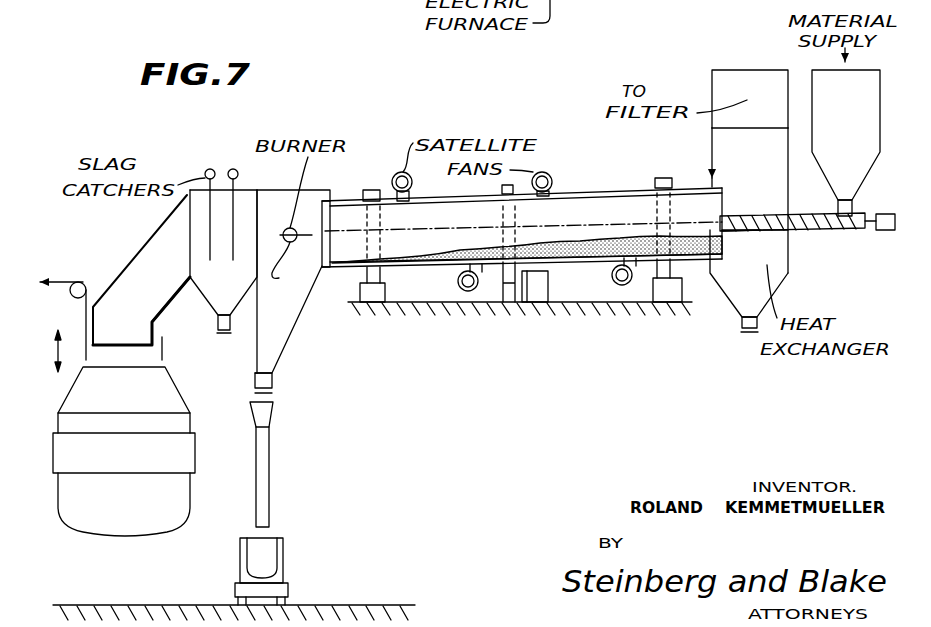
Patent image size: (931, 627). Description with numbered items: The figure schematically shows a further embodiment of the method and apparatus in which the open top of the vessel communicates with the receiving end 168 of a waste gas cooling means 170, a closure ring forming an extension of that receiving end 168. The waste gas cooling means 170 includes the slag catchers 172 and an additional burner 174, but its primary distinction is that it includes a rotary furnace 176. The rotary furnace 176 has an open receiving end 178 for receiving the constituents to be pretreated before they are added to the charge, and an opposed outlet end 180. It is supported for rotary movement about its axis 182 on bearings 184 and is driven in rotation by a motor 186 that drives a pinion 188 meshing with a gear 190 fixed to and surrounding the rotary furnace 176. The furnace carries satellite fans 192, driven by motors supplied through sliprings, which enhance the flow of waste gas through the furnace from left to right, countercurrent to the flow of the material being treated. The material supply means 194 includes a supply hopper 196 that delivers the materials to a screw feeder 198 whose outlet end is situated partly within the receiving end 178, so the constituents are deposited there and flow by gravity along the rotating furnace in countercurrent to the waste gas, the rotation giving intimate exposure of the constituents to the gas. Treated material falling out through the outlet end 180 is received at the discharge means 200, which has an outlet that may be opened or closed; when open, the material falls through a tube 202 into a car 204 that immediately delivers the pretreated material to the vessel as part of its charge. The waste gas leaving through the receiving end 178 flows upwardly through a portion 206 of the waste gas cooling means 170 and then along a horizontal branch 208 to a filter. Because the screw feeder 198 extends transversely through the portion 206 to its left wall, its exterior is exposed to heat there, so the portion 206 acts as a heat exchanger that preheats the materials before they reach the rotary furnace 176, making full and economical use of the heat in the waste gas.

The receiving end 168 is at (103, 343).
The waste gas cooling means 170 is at (316, 183).
The slag catchers 172 is at (239, 177).
The additional burner 174 is at (293, 257).
The rotary furnace 176 is at (598, 185).
The receiving end 178 is at (708, 202).
The outlet end 180 is at (328, 220).
The axis 182 is at (450, 228).
The bearings 184 is at (380, 270).
The motor 186 is at (548, 280).
The pinion 188 is at (507, 277).
The gear 190 is at (500, 190).
The satellite fans 192 is at (556, 176).
The material supply means 194 is at (806, 241).
The supply hopper 196 is at (865, 120).
The screw feeder 198 is at (790, 214).
The discharge means 200 is at (292, 347).
The tube 202 is at (270, 462).
The car 204 is at (274, 555).
The portion of the waste gas cooling means 206 is at (768, 160).
The horizontal branch 208 is at (768, 95).